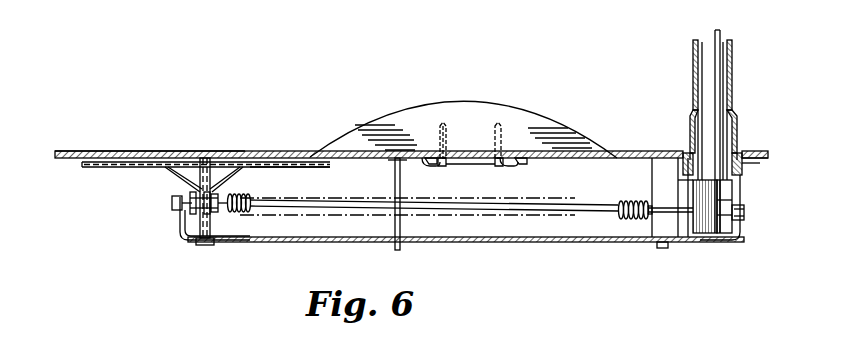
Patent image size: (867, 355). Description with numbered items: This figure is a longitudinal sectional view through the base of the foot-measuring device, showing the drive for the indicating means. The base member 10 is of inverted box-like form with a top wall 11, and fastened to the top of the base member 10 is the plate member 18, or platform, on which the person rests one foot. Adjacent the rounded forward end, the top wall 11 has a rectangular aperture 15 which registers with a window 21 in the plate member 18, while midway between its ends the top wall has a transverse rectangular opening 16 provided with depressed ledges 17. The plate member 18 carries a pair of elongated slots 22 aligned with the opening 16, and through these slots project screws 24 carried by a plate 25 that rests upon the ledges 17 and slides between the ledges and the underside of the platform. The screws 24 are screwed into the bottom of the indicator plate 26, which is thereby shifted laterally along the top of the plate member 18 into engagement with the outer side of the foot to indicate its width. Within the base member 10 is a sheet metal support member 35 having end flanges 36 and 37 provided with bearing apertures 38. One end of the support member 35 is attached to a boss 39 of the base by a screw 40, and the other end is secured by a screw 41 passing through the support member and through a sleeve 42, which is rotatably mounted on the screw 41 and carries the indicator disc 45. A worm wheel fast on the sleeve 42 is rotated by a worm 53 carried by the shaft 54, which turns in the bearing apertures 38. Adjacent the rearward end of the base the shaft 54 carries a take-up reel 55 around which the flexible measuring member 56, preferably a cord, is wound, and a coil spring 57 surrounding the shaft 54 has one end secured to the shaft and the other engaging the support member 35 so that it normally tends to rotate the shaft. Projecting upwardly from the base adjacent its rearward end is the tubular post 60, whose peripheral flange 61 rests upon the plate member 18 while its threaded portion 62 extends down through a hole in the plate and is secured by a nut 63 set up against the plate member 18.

The base member 10 is at (456, 146).
The top wall 11 is at (402, 162).
The rectangular aperture 15 is at (88, 168).
The rectangular opening 16 is at (428, 168).
The depressed ledges 17 is at (444, 168).
The plate member 18 is at (283, 151).
The window 21 is at (118, 151).
The elongated slots 22 is at (438, 156).
The screws 24 is at (440, 126).
The plate 25 is at (470, 166).
The indicator plate 26 is at (540, 116).
The support member 35 is at (322, 243).
The end flange 36 is at (178, 224).
The end flange 37 is at (742, 233).
The bearing apertures 38 is at (172, 208).
The boss 39 is at (660, 187).
The screw 40 is at (663, 249).
The screw 41 is at (207, 246).
The sleeve 42 is at (215, 228).
The indicator disc 45 is at (310, 168).
The worm 53 is at (195, 220).
The shaft 54 is at (448, 211).
The take-up reel 55 is at (724, 240).
The flexible measuring member 56 is at (712, 75).
The coil spring 57 is at (628, 222).
The tubular post 60 is at (692, 46).
The peripheral flange 61 is at (683, 153).
The threaded portion 62 is at (742, 153).
The nut 63 is at (742, 170).